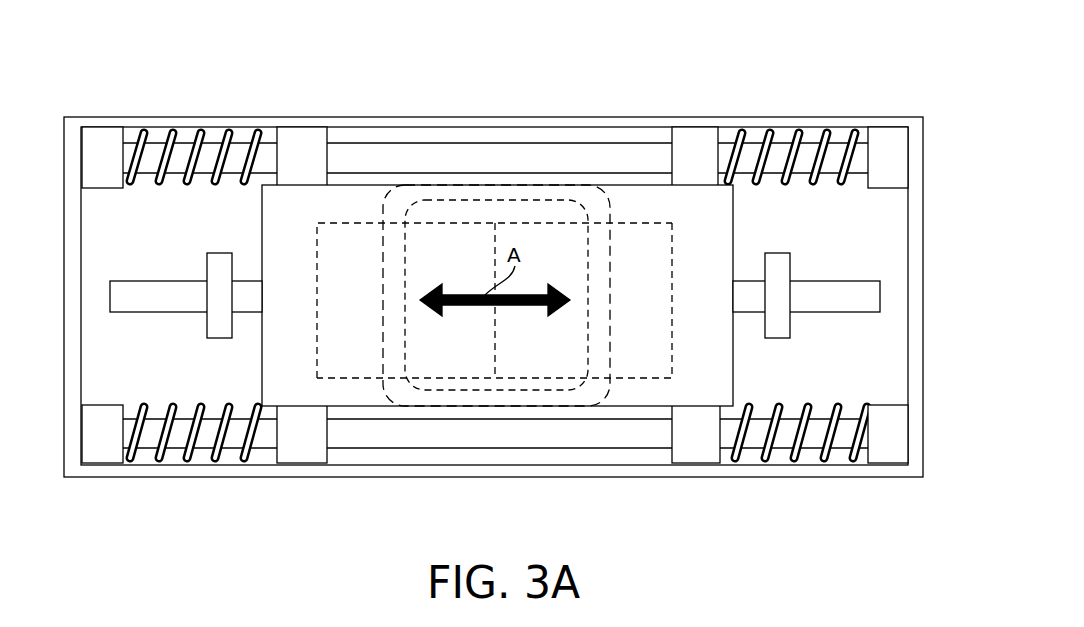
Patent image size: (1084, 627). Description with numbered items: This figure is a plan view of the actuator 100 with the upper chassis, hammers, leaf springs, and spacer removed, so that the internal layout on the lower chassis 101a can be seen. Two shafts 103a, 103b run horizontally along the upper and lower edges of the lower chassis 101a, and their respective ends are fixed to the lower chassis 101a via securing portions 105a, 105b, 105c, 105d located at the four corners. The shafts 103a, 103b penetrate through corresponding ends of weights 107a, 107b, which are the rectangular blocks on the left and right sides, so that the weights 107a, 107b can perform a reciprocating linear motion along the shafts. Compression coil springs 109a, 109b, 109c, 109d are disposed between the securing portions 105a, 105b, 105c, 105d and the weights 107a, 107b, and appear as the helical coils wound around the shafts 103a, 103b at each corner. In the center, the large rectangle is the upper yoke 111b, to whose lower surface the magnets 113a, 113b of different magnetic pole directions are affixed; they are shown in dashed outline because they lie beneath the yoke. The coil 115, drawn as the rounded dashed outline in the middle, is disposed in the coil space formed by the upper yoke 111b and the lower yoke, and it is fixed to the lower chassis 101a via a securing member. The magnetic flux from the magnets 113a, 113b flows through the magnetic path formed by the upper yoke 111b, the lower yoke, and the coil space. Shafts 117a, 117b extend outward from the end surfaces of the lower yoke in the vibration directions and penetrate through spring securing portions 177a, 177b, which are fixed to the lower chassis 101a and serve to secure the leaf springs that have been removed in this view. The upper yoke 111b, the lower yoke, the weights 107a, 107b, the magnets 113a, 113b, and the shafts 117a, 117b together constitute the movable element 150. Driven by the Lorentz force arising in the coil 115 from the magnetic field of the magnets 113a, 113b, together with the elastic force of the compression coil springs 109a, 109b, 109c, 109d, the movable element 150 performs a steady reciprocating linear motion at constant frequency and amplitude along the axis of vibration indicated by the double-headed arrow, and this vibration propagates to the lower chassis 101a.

The actuator 100 is at (864, 100).
The lower chassis 101a is at (495, 117).
The movable element 150 is at (617, 140).
The shaft 103a is at (395, 140).
The shaft 103b is at (348, 445).
The securing portion 105a is at (98, 127).
The securing portion 105b is at (888, 175).
The securing portion 105c is at (102, 415).
The securing portion 105d is at (895, 450).
The weight 107a is at (297, 140).
The weight 107b is at (705, 135).
The compression coil spring 109a is at (178, 131).
The compression coil spring 109b is at (778, 135).
The compression coil spring 109c is at (185, 450).
The compression coil spring 109d is at (790, 450).
The upper yoke 111b is at (320, 400).
The magnet 113a is at (317, 240).
The magnet 113b is at (700, 222).
The coil 115 is at (608, 330).
The shaft 117a is at (122, 280).
The shaft 117b is at (812, 312).
The spring securing portion 177a is at (217, 253).
The spring securing portion 177b is at (777, 262).